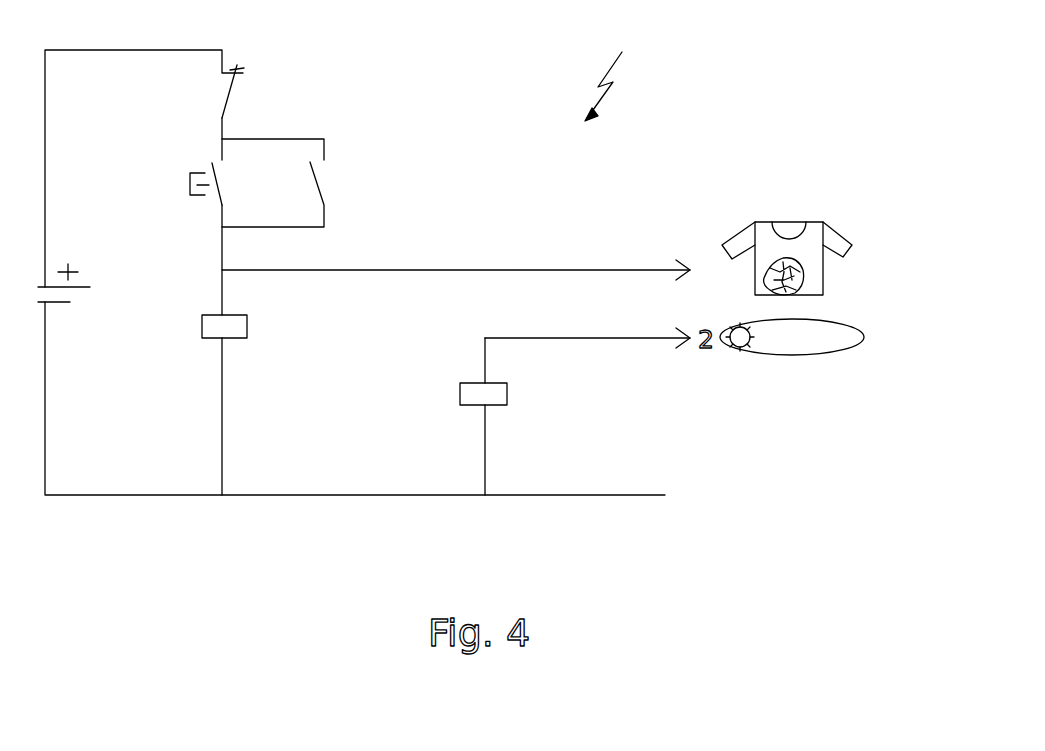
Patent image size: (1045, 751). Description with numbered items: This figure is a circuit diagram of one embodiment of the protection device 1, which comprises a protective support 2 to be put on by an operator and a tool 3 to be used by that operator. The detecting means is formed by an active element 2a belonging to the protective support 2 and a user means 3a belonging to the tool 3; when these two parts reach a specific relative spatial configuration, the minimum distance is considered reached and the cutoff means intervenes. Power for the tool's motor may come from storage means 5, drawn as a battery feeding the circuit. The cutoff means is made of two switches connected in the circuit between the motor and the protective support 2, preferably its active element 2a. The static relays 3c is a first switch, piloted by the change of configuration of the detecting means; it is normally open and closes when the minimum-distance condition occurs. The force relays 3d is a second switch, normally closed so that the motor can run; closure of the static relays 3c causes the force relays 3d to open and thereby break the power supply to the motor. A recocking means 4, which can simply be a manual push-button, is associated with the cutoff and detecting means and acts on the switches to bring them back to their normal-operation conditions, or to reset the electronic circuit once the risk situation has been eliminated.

The protection device 1 is at (468, 272).
The protective support 2 is at (786, 226).
The active element 2a is at (800, 275).
The tool 3 is at (737, 361).
The user means 3a is at (857, 347).
The static relays 3c is at (472, 412).
The force relays 3d is at (233, 345).
The recocking means 4 is at (278, 121).
The storage means 5 is at (85, 307).